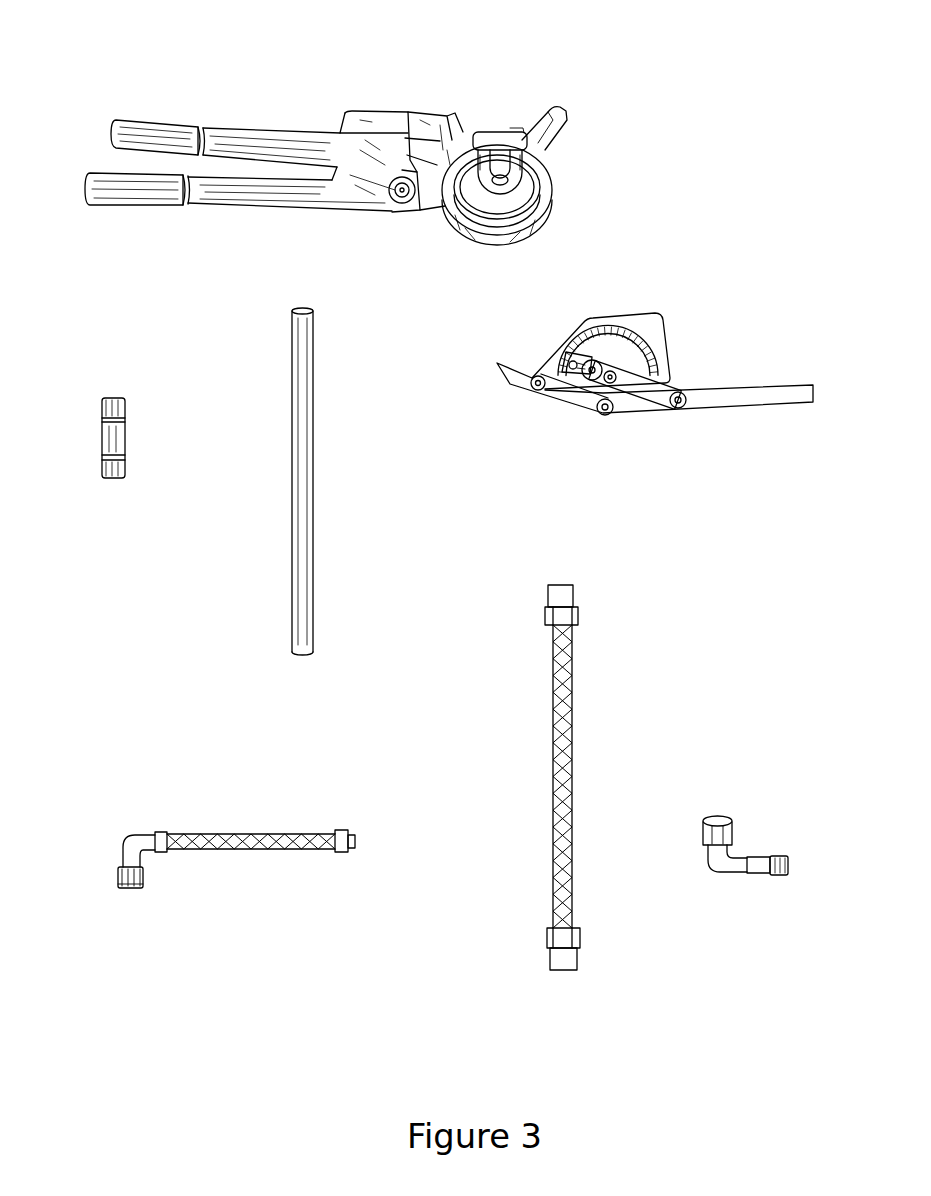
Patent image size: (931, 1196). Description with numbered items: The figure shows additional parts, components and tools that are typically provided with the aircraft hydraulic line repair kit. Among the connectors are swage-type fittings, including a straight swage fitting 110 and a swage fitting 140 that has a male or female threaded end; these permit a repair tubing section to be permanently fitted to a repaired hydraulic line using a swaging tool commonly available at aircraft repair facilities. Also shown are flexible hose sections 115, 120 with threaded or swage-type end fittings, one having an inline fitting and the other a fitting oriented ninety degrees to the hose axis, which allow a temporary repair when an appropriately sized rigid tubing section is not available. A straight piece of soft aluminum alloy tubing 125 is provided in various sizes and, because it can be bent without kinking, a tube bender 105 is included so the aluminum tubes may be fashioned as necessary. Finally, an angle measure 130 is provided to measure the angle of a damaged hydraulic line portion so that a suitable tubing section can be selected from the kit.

The tube bender 105 is at (523, 98).
The straight swage fitting 110 is at (100, 427).
The flexible hose section 115 is at (247, 832).
The flexible hose section 120 is at (572, 738).
The aluminum alloy tubing 125 is at (313, 415).
The angle measure 130 is at (738, 387).
The swage fitting 140 is at (727, 875).